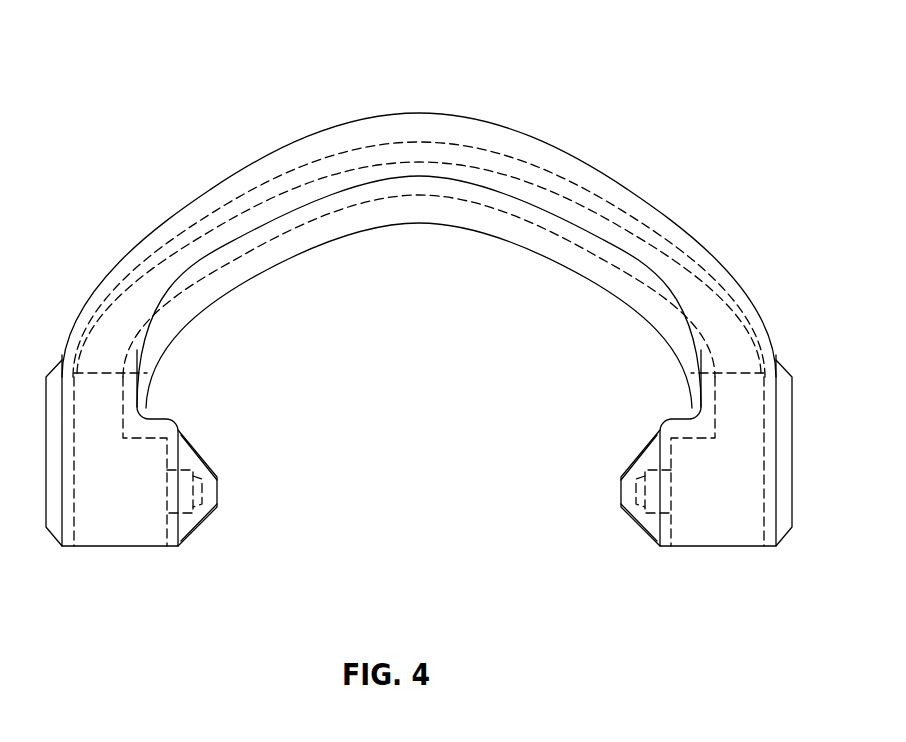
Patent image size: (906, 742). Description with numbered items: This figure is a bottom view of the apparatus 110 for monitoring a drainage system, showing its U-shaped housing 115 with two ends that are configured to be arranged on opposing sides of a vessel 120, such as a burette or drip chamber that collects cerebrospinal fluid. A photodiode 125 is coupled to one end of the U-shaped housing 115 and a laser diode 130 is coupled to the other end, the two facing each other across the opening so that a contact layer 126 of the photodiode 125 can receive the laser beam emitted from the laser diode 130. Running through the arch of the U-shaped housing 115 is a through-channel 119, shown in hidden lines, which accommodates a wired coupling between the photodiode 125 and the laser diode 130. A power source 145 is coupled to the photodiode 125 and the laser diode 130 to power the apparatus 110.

The apparatus 110 is at (636, 84).
The power source 145 is at (420, 112).
The through-channel 119 is at (642, 222).
The U-shaped housing 115 is at (199, 527).
The vessel 120 is at (637, 527).
The laser diode 130 is at (217, 493).
The photodiode 125 is at (622, 493).
The contact layer 126 is at (622, 493).